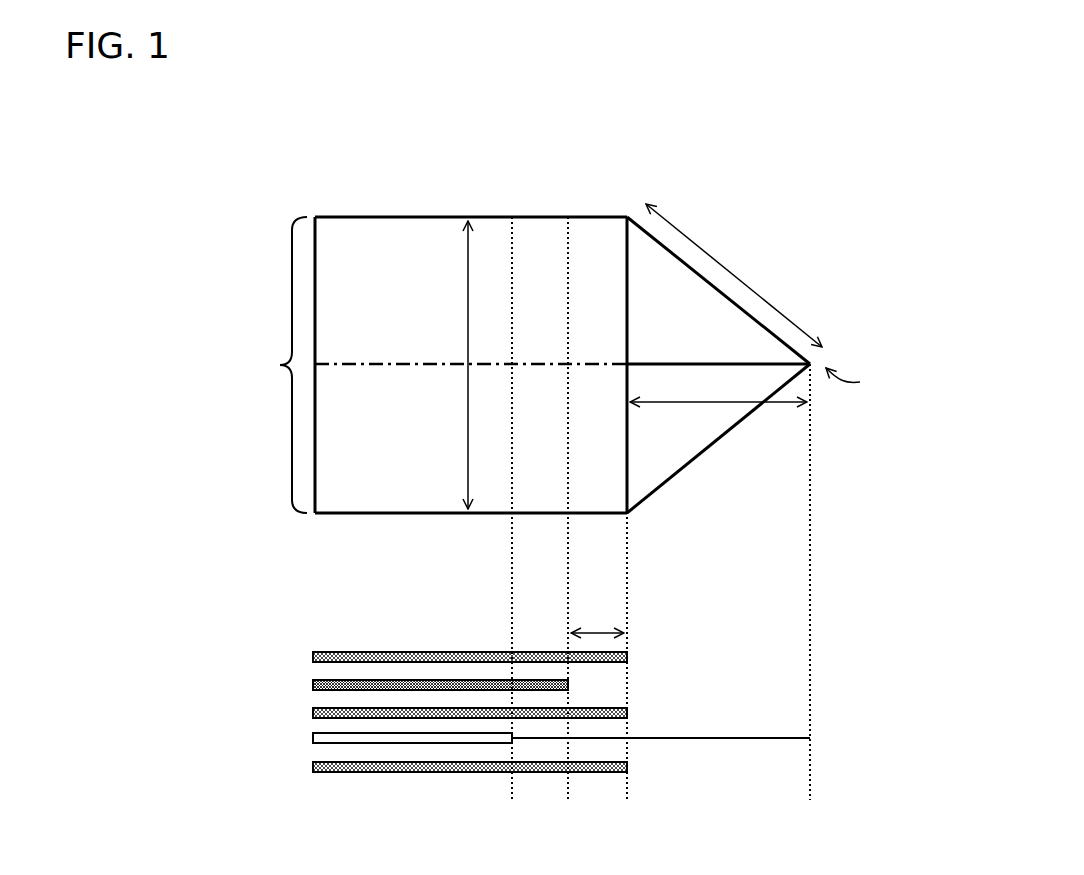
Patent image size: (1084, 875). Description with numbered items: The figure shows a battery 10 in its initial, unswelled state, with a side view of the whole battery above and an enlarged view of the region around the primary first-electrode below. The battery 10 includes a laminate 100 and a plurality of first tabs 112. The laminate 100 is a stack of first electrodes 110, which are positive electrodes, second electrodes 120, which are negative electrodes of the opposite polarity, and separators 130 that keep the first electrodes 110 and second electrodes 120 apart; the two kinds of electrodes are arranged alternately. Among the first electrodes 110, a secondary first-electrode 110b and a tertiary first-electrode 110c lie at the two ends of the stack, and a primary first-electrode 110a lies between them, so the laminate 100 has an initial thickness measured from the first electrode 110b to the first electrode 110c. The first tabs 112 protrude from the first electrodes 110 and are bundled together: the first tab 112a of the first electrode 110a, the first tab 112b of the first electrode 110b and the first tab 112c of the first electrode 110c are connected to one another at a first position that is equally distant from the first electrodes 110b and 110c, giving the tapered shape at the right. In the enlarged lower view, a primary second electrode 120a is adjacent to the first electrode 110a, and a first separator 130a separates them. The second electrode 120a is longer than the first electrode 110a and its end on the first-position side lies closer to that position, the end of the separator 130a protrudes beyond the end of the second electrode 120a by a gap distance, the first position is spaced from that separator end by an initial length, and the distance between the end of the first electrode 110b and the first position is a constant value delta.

The battery 10 is at (869, 108).
The laminate 100 is at (263, 365).
The first electrode 110 is at (462, 437).
The primary first-electrode 110a is at (397, 363).
The secondary first-electrode 110b is at (375, 217).
The tertiary first-electrode 110c is at (372, 513).
The first tab 112 is at (778, 472).
The first tab of the first electrode 110a 112a is at (780, 355).
The first tab of the first electrode 110b 112b is at (678, 255).
The first tab of the first electrode 110c 112c is at (698, 455).
The second electrode 120 is at (341, 670).
The primary second electrode 120a is at (313, 685).
The separator 130 is at (313, 657).
The first separator 130a is at (371, 700).